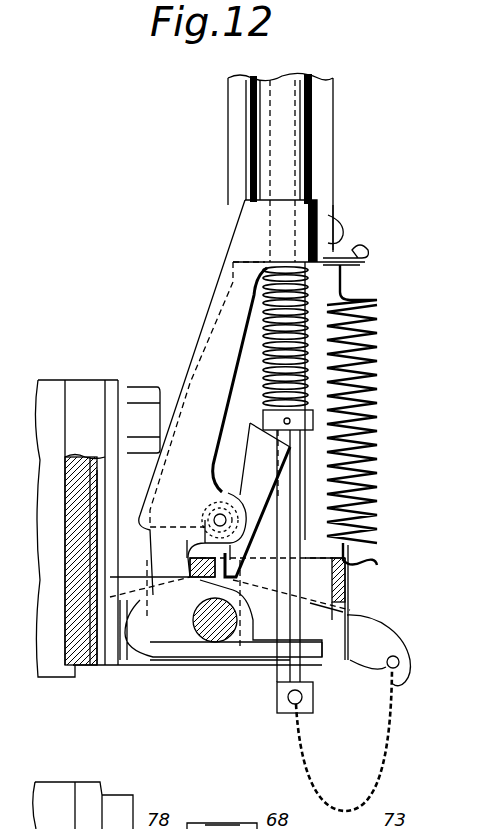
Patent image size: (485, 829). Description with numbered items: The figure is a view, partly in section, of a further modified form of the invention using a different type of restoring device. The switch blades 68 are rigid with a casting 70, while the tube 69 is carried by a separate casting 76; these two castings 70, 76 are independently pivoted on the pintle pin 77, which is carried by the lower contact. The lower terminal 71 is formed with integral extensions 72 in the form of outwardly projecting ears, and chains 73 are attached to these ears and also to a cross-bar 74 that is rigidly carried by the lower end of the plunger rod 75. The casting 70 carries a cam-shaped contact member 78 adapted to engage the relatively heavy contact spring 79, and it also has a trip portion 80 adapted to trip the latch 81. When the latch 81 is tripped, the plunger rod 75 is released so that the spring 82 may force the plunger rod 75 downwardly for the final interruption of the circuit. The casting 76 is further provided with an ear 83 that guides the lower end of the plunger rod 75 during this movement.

The switch blades 68 is at (333, 170).
The tube 69 is at (245, 147).
The casting 70 is at (348, 590).
The lower terminal 71 is at (77, 678).
The integral extensions 72 is at (397, 690).
The chains 73 is at (316, 778).
The cross-bar 74 is at (277, 700).
The plunger rod 75 is at (283, 538).
The casting 76 is at (225, 295).
The pintle pin 77 is at (215, 632).
The cam-shaped contact member 78 is at (150, 662).
The contact spring 79 is at (112, 672).
The trip portion 80 is at (196, 580).
The latch 81 is at (250, 452).
The spring 82 is at (263, 372).
The ear 83 is at (316, 676).